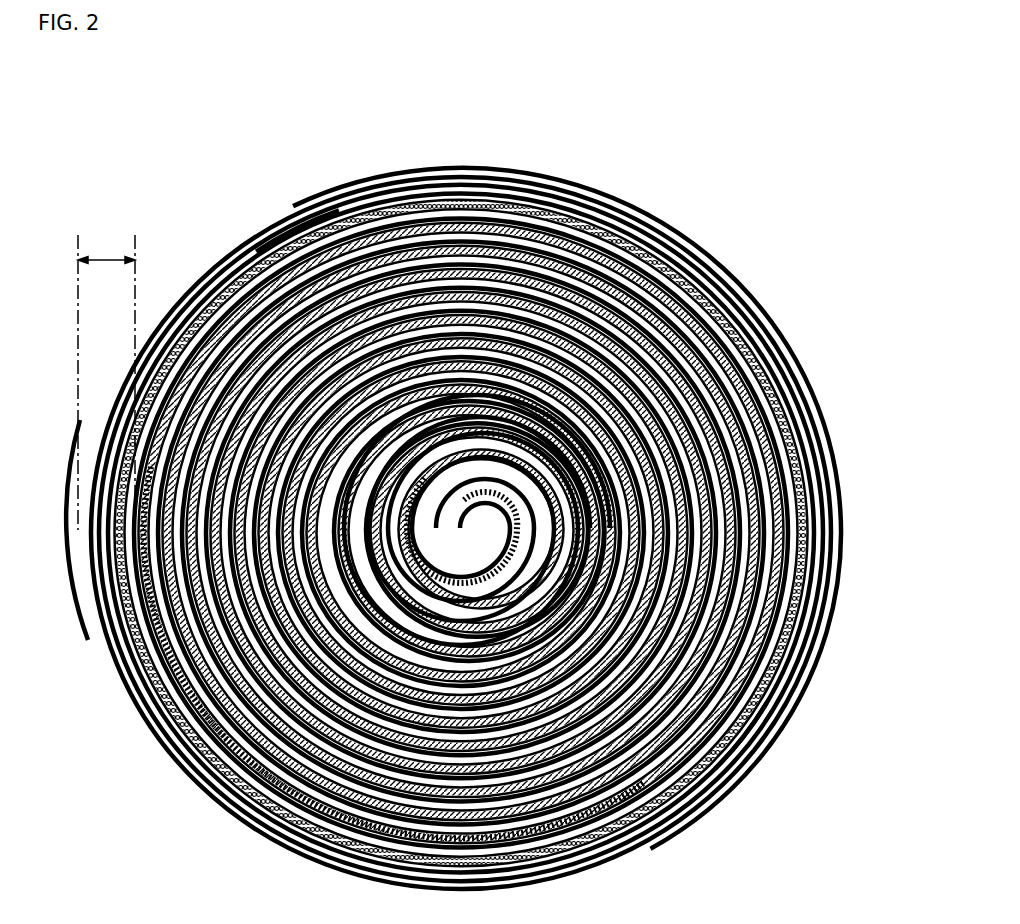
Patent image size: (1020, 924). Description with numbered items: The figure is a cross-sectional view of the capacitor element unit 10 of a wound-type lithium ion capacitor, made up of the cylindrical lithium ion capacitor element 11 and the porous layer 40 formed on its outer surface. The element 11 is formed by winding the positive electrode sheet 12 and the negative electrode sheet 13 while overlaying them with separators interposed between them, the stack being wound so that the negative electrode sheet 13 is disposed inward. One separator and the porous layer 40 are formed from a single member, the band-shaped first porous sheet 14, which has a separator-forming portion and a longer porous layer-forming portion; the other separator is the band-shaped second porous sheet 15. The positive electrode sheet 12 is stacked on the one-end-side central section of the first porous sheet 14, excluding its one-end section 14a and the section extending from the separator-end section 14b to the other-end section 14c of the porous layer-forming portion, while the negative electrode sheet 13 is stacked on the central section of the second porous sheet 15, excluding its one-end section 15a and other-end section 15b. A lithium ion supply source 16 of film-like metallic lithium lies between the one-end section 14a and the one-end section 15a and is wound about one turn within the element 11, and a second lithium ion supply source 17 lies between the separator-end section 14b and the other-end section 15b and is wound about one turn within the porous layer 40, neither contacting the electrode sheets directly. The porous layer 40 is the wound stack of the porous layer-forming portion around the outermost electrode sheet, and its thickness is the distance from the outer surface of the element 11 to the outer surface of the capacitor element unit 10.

The capacitor element unit 10 is at (455, 500).
The lithium ion capacitor element 11 is at (177, 687).
The positive electrode sheet 12 is at (710, 567).
The negative electrode sheet 13 is at (667, 427).
The first porous sheet 14 is at (693, 632).
The one-end section of the first porous sheet 14a is at (503, 482).
The separator-end section 14b is at (740, 743).
The other-end section of the porous layer-forming portion 14c is at (242, 233).
The second porous sheet 15 is at (690, 456).
The one-end section of the second porous sheet 15a is at (482, 483).
The other-end section of the second porous sheet 15b is at (643, 803).
The lithium ion supply source 16 is at (465, 482).
The lithium ion supply source 17 is at (625, 236).
The porous layer 40 is at (168, 291).